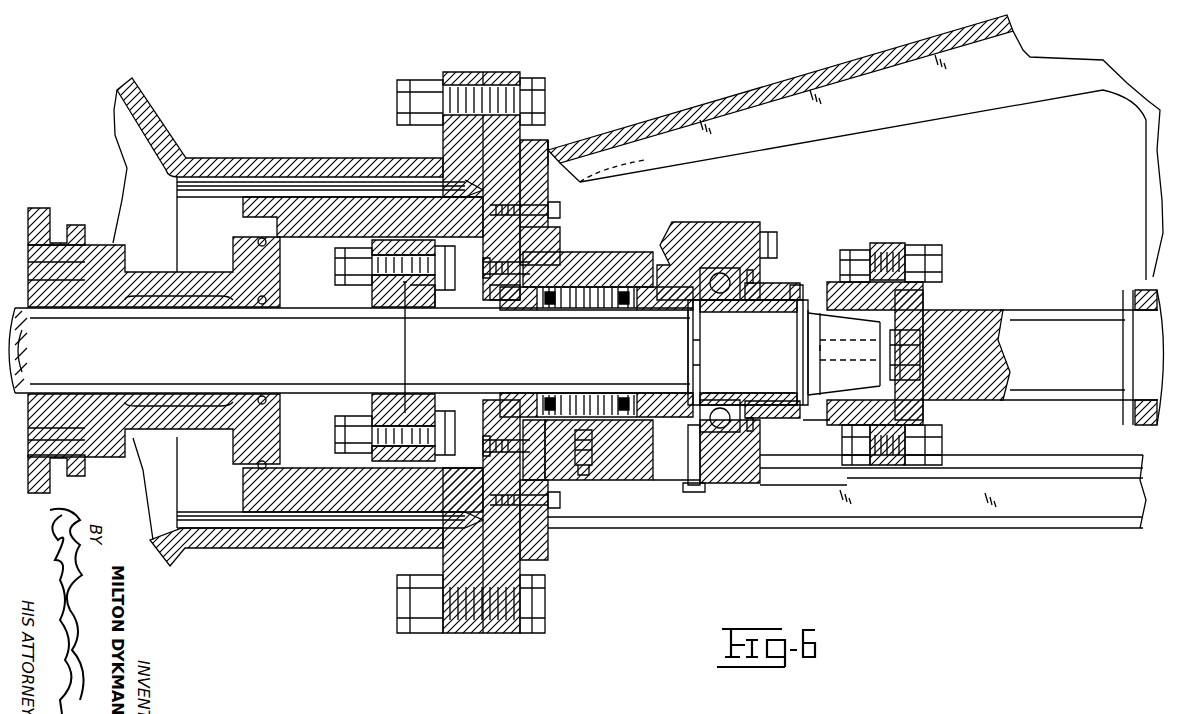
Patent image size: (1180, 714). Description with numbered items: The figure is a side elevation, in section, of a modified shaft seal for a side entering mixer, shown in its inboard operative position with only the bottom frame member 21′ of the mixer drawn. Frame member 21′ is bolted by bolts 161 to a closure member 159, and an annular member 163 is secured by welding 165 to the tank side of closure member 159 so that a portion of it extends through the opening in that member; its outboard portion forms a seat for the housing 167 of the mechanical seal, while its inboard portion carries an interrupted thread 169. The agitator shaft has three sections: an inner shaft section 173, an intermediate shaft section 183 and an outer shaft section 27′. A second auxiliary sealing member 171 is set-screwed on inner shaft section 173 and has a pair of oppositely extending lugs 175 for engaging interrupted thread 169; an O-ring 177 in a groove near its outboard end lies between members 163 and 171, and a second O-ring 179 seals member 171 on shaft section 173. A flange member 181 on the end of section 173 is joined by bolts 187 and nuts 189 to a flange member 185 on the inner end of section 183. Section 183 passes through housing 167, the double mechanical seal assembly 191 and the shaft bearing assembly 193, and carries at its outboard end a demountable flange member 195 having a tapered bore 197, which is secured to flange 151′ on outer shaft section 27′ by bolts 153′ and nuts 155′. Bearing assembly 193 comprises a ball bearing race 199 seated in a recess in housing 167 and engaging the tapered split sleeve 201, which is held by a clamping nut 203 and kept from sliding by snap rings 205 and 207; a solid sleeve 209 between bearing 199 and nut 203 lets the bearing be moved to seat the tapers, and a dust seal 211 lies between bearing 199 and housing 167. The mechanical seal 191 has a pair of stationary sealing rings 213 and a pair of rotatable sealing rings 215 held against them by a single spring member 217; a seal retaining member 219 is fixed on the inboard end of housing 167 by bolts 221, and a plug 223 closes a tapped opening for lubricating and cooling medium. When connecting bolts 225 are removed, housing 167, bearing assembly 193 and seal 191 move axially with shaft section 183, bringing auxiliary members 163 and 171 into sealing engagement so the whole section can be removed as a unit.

The bottom frame member 21′ is at (798, 72).
The outer shaft section 27′ is at (1040, 361).
The flange 151′ is at (912, 243).
The bolts 153′ is at (945, 264).
The nuts 155′ is at (858, 247).
The closure member 159 is at (497, 72).
The bolts 161 is at (572, 186).
The annular member 163 is at (306, 197).
The welding 165 is at (466, 183).
The housing 167 is at (630, 458).
The interrupted thread 169 is at (262, 480).
The second auxiliary sealing member 171 is at (142, 272).
The inner shaft section 173 is at (130, 361).
The lugs 175 is at (80, 225).
The O-ring 177 is at (256, 466).
The second O-ring 179 is at (262, 306).
The flange member 181 is at (380, 310).
The intermediate shaft section 183 is at (530, 373).
The flange member 185 is at (432, 310).
The bolts 187 is at (445, 272).
The nuts 189 is at (343, 278).
The double mechanical seal assembly 191 is at (648, 243).
The shaft bearing assembly 193 is at (778, 276).
The demountable flange member 195 is at (885, 243).
The tapered bore 197 is at (850, 418).
The ball bearing race 199 is at (722, 302).
The split sleeve 201 is at (775, 313).
The clamping nut 203 is at (795, 293).
The snap ring 205 is at (688, 370).
The snap ring 207 is at (806, 372).
The solid sleeve 209 is at (765, 395).
The dust seal 211 is at (765, 420).
The stationary sealing rings 213 is at (516, 312).
The rotatable sealing rings 215 is at (545, 312).
The spring member 217 is at (598, 287).
The seal retaining member 219 is at (492, 293).
The bolts 221 is at (490, 268).
The plug 223 is at (588, 468).
The connecting bolts 225 is at (562, 210).